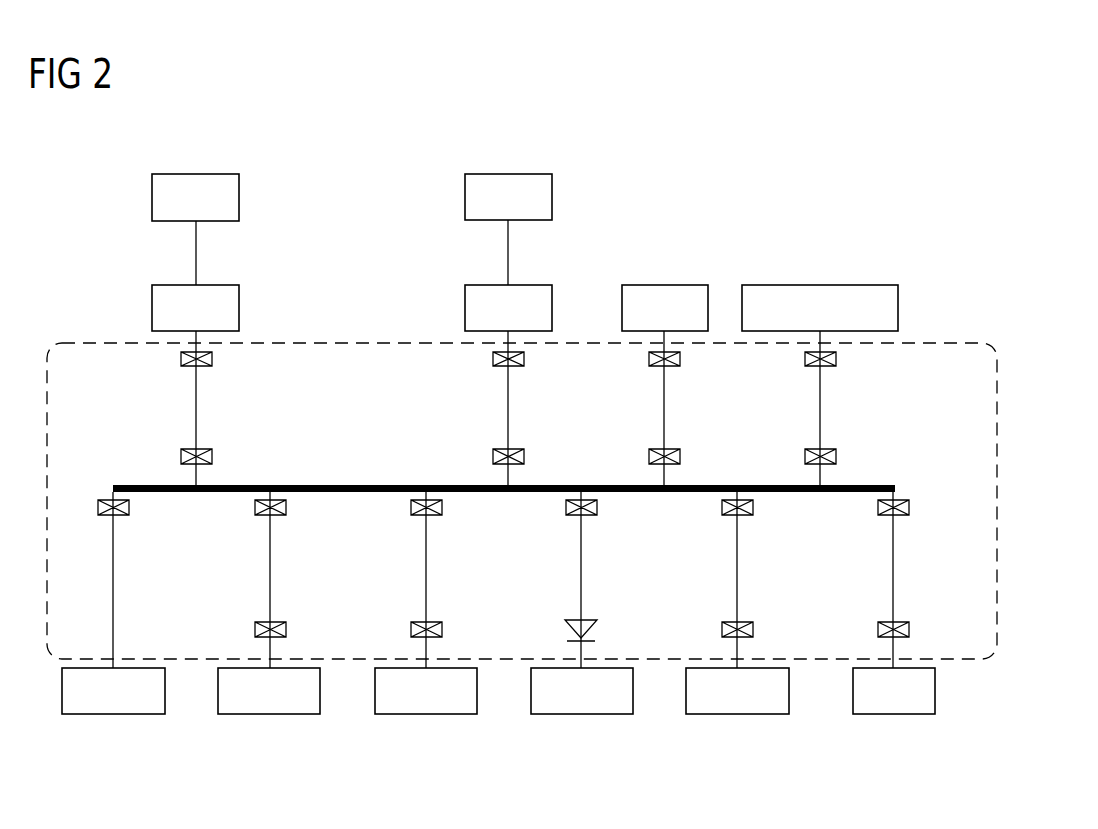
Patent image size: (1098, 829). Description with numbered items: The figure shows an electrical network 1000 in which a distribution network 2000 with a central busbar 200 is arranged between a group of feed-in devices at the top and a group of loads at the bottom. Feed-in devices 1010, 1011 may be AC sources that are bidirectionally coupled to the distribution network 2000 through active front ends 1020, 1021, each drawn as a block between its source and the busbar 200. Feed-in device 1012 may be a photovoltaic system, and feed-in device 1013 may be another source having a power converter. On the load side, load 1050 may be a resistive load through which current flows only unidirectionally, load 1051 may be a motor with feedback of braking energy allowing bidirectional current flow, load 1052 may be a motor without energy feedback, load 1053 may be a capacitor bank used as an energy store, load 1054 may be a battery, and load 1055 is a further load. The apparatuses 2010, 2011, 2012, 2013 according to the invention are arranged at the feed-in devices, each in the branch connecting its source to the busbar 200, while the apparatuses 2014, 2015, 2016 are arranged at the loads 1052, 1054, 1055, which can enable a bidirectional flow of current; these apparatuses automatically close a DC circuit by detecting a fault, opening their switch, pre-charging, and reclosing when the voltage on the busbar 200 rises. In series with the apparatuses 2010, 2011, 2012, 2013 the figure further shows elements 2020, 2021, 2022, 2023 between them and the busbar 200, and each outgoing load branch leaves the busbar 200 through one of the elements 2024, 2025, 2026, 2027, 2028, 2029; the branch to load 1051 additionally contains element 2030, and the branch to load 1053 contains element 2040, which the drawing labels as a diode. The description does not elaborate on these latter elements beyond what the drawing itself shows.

The electrical network 1000 is at (920, 160).
The distribution network 2000 is at (1000, 413).
The busbar 200 is at (347, 483).
The feed-in device 1010 is at (221, 173).
The feed-in device 1011 is at (533, 173).
The feed-in device 1012 is at (690, 284).
The feed-in device 1013 is at (866, 284).
The active front end 1020 is at (221, 284).
The active front end 1021 is at (533, 284).
The apparatus 2010 is at (179, 356).
The apparatus 2011 is at (491, 356).
The apparatus 2012 is at (657, 368).
The apparatus 2013 is at (814, 368).
The electromechanical circuit breaker PD1.1.2 2020 is at (179, 456).
The electromechanical circuit breaker PD1.2.2 2021 is at (491, 456).
The electromechanical circuit breaker PD1.3.2 2022 is at (657, 447).
The electromechanical circuit breaker PD1.4.2 2023 is at (814, 447).
The electromechanical circuit breaker PD2.1.1 2024 is at (108, 516).
The electromechanical circuit breaker PD2.2.1 2025 is at (263, 516).
The electromechanical circuit breaker PD2.3.1 2026 is at (419, 516).
The electromechanical circuit breaker PD2.4.1 2027 is at (574, 516).
The electromechanical circuit breaker PD2.5.1 2028 is at (730, 516).
The electromechanical circuit breaker PD2.6.1 2029 is at (886, 516).
The electromechanical circuit breaker PD2.2.2 2030 is at (263, 621).
The apparatus 2014 is at (419, 621).
The apparatus 2015 is at (730, 621).
The apparatus 2016 is at (886, 621).
The diode PD2.4.2 2040 is at (588, 621).
The load 1050 is at (113, 715).
The load 1051 is at (270, 715).
The load 1052 is at (426, 715).
The load 1053 is at (581, 715).
The load 1054 is at (737, 715).
The load 1055 is at (893, 715).